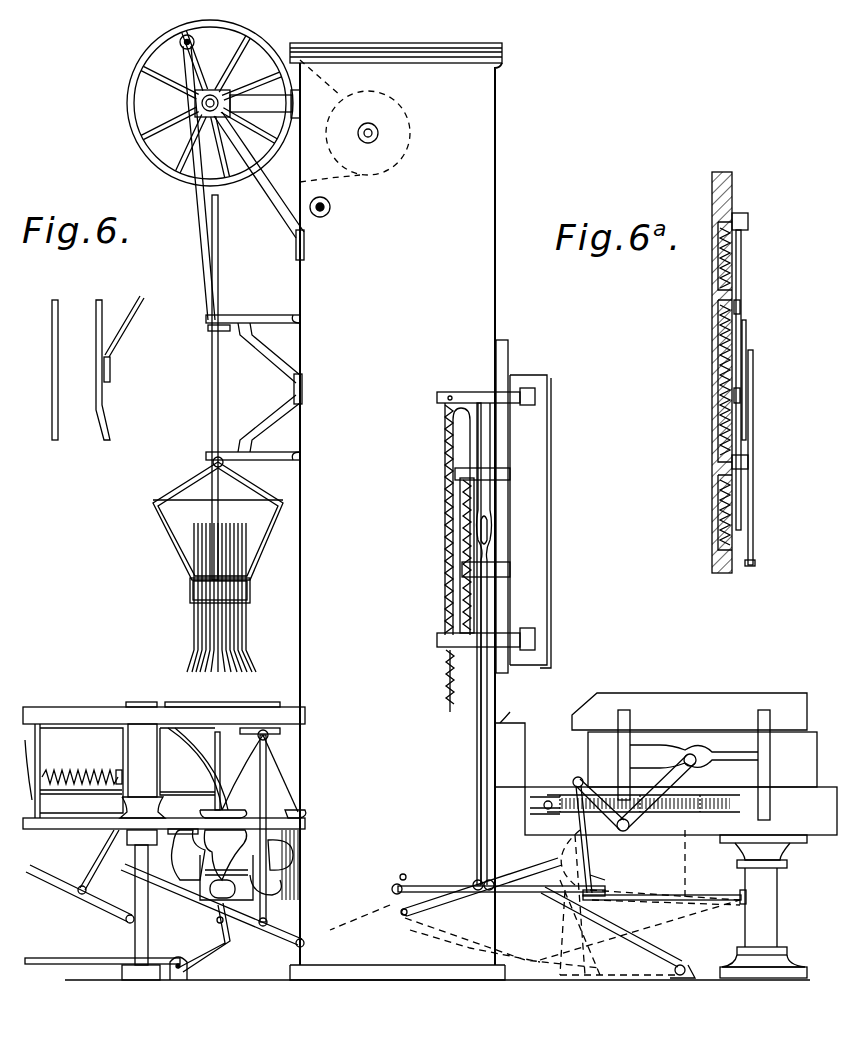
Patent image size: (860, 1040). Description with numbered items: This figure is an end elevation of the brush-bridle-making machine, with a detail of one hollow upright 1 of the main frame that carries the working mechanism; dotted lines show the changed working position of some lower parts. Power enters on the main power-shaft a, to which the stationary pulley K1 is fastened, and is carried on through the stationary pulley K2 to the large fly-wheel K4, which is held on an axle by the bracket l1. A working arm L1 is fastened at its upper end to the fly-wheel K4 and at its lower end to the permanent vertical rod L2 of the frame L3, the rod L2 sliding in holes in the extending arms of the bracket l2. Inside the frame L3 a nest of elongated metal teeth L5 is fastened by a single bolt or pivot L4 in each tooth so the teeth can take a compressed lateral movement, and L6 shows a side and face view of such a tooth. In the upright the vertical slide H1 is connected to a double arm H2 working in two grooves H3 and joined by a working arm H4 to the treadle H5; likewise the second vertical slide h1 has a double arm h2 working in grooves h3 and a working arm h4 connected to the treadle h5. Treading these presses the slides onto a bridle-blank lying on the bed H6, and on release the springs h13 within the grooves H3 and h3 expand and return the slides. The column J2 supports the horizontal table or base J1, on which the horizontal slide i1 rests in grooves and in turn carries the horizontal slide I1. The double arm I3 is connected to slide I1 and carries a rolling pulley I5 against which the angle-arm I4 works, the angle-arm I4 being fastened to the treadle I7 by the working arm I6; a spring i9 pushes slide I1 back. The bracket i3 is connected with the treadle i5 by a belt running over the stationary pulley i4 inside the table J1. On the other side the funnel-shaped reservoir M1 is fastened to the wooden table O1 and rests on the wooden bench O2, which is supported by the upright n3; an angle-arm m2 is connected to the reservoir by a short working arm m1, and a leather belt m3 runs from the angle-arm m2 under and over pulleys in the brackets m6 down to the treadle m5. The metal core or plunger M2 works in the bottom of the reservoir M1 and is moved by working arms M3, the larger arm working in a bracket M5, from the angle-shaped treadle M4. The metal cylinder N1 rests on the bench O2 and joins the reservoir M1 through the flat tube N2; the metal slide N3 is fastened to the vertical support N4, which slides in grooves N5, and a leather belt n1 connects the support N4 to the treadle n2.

In FIG. 6, the hollow uprights 1 is at (437, 511).
In FIG. 6, the fly-wheel K4 is at (290, 56).
In FIG. 6, the stationary pulley K1 is at (373, 139).
In FIG. 6, the stationary pulley K2 is at (328, 212).
In FIG. 6, the working arm L1 is at (207, 262).
In FIG. 6, the bracket with axle l1 is at (268, 214).
In FIG. 6, the vertical rod L2 is at (209, 387).
In FIG. 6, the bracket l2 is at (254, 387).
In FIG. 6, the frame L3 is at (211, 518).
In FIG. 6, the bolt or pivot L4 is at (192, 585).
In FIG. 6, the elongated metal tooth L5 is at (196, 635).
In FIG. 6, the side and face view of tooth L6 is at (100, 395).
In FIG. 6, the vertical slide H1 is at (508, 360).
In FIG. 6, the second vertical slide h1 is at (530, 521).
In FIG. 6, the double arm h2 is at (458, 397).
In FIG. 6A, the double arm h2 is at (750, 218).
In FIG. 6, the double arm H2 is at (460, 490).
In FIG. 6A, the double arm H2 is at (742, 308).
In FIG. 6, the springs h13 is at (460, 520).
In FIG. 6A, the springs h13 is at (720, 440).
In FIG. 6, the grooves H3 is at (455, 608).
In FIG. 6A, the grooves H3 is at (718, 378).
In FIG. 6, the grooves h3 is at (447, 690).
In FIG. 6A, the grooves h3 is at (718, 270).
In FIG. 6, the working arm H4 is at (492, 823).
In FIG. 6A, the working arm H4 is at (742, 520).
In FIG. 6, the working arm h4 is at (477, 803).
In FIG. 6A, the working arm h4 is at (755, 566).
In FIG. 6, the bed H6 is at (510, 749).
In FIG. 6, the treadle h5 is at (440, 888).
In FIG. 6, the main power-shaft a is at (394, 874).
In FIG. 6, the treadle H5 is at (407, 920).
In FIG. 6, the horizontal slide I1 is at (787, 698).
In FIG. 6, the horizontal slide i1 is at (702, 759).
In FIG. 6, the horizontal table or base J1 is at (681, 811).
In FIG. 6, the double arm I3 is at (764, 712).
In FIG. 6, the rolling pulley I5 is at (690, 754).
In FIG. 6, the angle-arm I4 is at (628, 830).
In FIG. 6, the working arm I6 is at (590, 878).
In FIG. 6, the treadle I7 is at (665, 898).
In FIG. 6, the treadle i5 is at (618, 932).
In FIG. 6, the spring i9 is at (640, 902).
In FIG. 6, the bracket i3 is at (556, 860).
In FIG. 6, the stationary pulley i4 is at (542, 795).
In FIG. 6, the column J2 is at (763, 906).
In FIG. 6, the wooden table O1 is at (164, 714).
In FIG. 6, the wooden bench or table O2 is at (164, 823).
In FIG. 6, the grooves N5 is at (32, 771).
In FIG. 6, the vertical metal support or slide N4 is at (81, 770).
In FIG. 6, the metal slide N3 is at (60, 795).
In FIG. 6, the metal cylinder N1 is at (142, 771).
In FIG. 6, the oblong flat metal tube or channel N2 is at (175, 805).
In FIG. 6, the funnel-shaped metal reservoir M1 is at (200, 777).
In FIG. 6, the angle-arm m2 is at (222, 770).
In FIG. 6, the short working arm m1 is at (284, 776).
In FIG. 6, the leather belt m3 is at (266, 792).
In FIG. 6, the bracket M5 is at (195, 855).
In FIG. 6, the metal core or plunger M2 is at (231, 865).
In FIG. 6, the working arms M3 is at (220, 935).
In FIG. 6, the brackets m6 is at (288, 885).
In FIG. 6, the treadle m5 is at (265, 932).
In FIG. 6, the upright n3 is at (135, 855).
In FIG. 6, the leather belt n1 is at (98, 862).
In FIG. 6, the treadle n2 is at (79, 894).
In FIG. 6, the angle-shaped treadle M4 is at (102, 970).